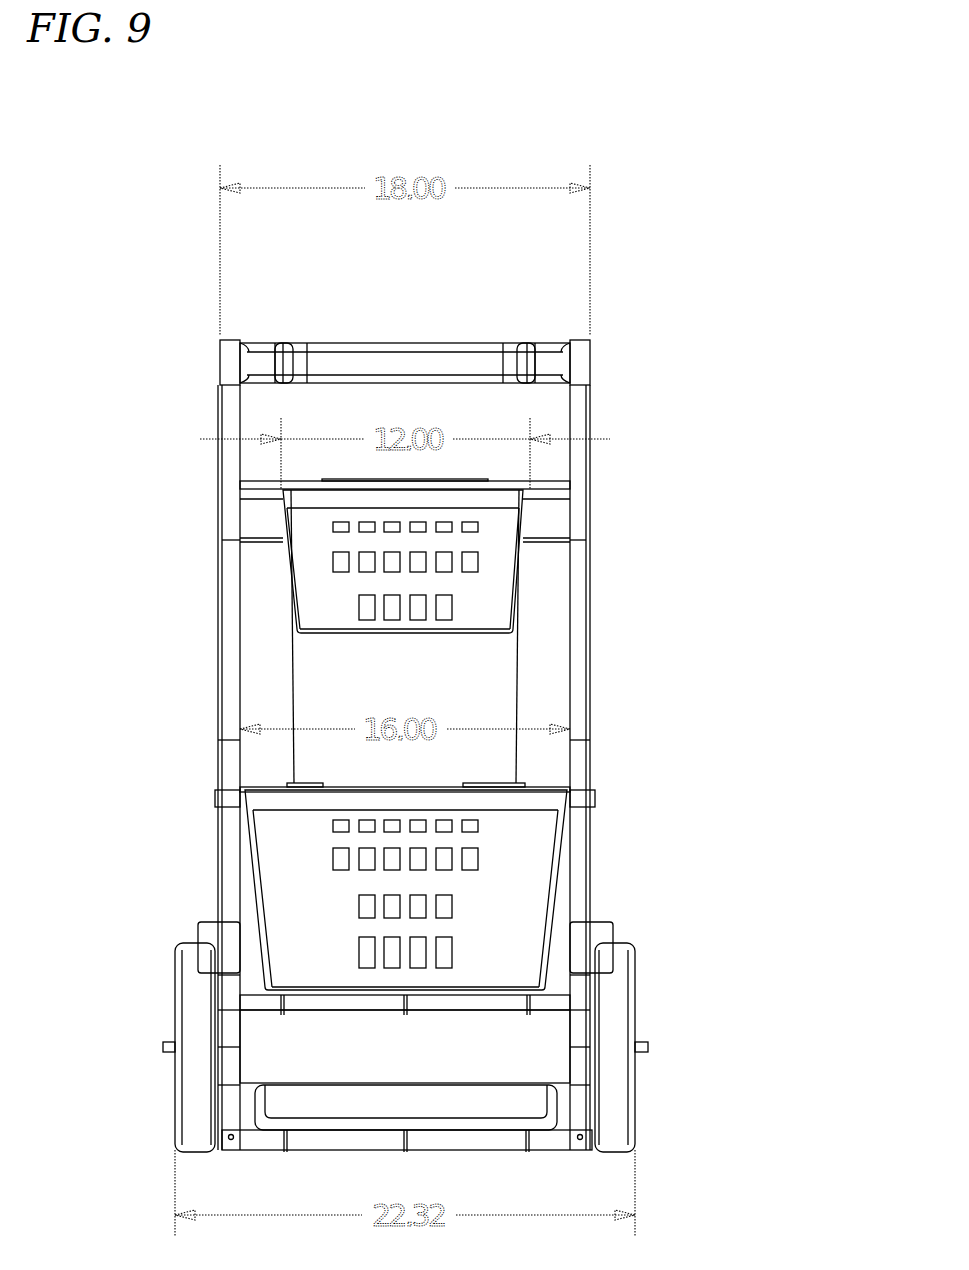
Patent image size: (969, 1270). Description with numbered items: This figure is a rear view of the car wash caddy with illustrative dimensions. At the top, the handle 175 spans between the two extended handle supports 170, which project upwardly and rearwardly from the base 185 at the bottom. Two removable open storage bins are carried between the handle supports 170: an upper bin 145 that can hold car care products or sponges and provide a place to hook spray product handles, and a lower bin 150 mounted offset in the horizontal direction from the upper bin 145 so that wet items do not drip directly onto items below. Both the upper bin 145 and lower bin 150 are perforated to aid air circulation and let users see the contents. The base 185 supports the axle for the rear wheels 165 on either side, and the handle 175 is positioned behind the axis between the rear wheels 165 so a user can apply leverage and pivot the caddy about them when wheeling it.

The upper bin 145 is at (497, 572).
The lower bin 150 is at (532, 864).
The rear wheels 165 is at (197, 1022).
The handle supports 170 is at (233, 574).
The handle 175 is at (423, 363).
The base 185 is at (580, 895).